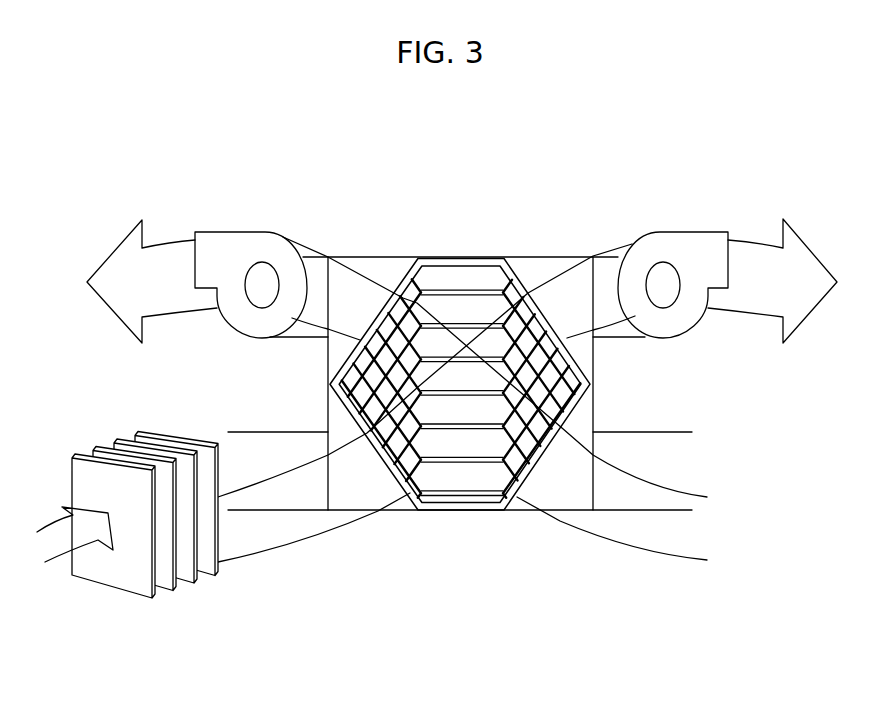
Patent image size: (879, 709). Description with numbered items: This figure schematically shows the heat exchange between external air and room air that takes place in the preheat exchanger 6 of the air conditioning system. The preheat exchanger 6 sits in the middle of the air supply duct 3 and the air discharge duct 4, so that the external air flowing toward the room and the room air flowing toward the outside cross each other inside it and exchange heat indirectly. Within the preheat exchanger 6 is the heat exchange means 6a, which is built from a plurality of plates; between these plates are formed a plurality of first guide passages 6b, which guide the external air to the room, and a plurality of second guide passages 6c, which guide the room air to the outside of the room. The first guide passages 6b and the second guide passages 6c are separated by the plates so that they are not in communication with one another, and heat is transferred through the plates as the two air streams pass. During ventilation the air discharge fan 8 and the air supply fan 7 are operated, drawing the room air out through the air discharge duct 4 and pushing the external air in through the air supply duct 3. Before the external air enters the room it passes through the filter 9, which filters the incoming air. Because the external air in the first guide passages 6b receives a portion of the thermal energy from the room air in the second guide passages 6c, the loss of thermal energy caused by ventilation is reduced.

The air supply duct 3 is at (668, 438).
The air discharge duct 4 is at (619, 332).
The preheat exchanger 6 is at (460, 364).
The heat exchange means 6a is at (528, 278).
The first guide passages 6b is at (451, 447).
The second guide passages 6c is at (430, 315).
The air supply fan 7 is at (694, 240).
The air discharge fan 8 is at (230, 240).
The filter 9 is at (113, 582).